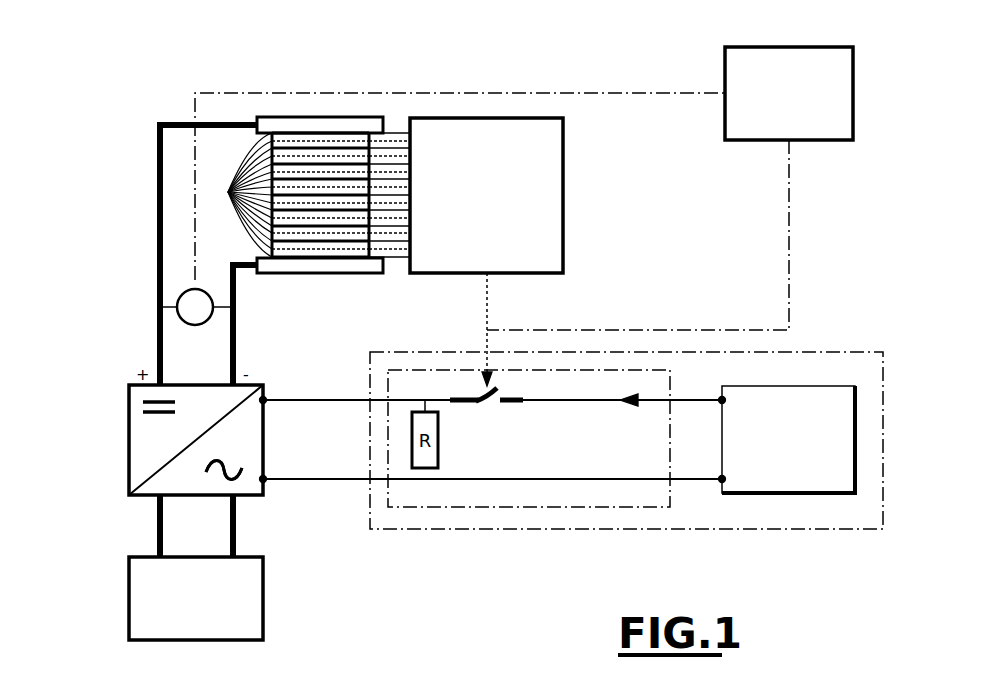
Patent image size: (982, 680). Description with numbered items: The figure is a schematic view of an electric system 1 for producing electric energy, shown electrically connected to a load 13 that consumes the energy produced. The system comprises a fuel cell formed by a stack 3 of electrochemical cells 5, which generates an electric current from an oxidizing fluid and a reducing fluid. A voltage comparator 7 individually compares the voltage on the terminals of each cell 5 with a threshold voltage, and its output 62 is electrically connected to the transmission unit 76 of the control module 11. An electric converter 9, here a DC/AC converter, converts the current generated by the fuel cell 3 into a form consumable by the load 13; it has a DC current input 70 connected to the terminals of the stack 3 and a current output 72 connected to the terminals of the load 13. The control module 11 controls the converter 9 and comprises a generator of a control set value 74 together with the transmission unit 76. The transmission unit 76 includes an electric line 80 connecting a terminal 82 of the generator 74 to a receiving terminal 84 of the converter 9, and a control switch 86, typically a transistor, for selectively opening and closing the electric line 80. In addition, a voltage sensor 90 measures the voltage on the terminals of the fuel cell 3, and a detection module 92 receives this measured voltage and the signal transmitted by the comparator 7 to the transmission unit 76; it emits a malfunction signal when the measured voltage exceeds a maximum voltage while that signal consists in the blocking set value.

The electric system 1 is at (166, 73).
The stack 3 is at (368, 108).
The electrochemical cells 5 is at (289, 195).
The voltage comparator 7 is at (486, 195).
The electric converter 9 is at (118, 483).
The control module 11 is at (817, 530).
The load 13 is at (196, 598).
The output of the voltage comparator 62 is at (484, 285).
The DC current input 70 is at (137, 440).
The current output 72 is at (250, 490).
The generator of a control set value 74 is at (788, 439).
The transmission unit 76 is at (548, 507).
The electric line 80 is at (582, 398).
The terminal 82 is at (726, 399).
The receiving terminal 84 is at (275, 385).
The control switch 86 is at (487, 410).
The voltage sensor 90 is at (195, 326).
The detection module 92 is at (789, 93).